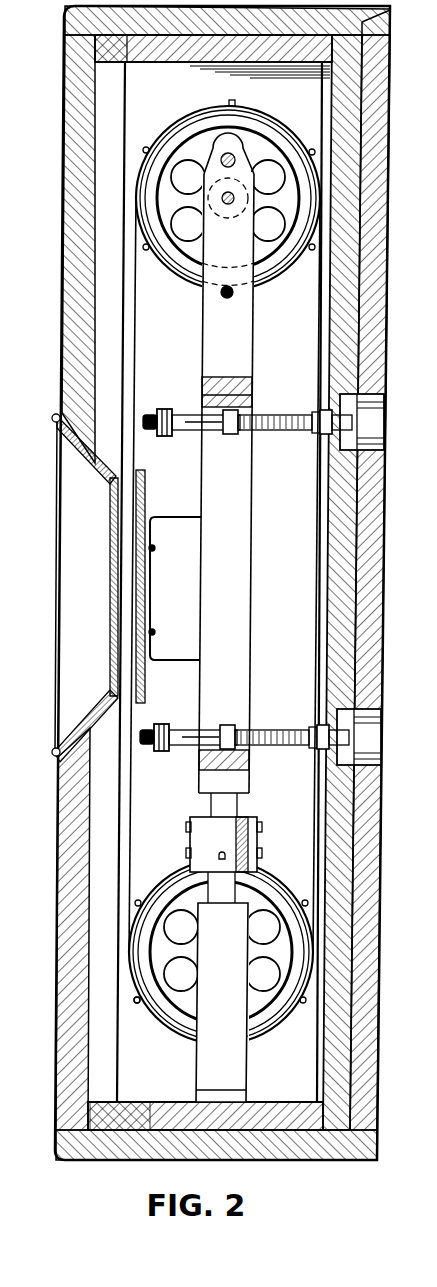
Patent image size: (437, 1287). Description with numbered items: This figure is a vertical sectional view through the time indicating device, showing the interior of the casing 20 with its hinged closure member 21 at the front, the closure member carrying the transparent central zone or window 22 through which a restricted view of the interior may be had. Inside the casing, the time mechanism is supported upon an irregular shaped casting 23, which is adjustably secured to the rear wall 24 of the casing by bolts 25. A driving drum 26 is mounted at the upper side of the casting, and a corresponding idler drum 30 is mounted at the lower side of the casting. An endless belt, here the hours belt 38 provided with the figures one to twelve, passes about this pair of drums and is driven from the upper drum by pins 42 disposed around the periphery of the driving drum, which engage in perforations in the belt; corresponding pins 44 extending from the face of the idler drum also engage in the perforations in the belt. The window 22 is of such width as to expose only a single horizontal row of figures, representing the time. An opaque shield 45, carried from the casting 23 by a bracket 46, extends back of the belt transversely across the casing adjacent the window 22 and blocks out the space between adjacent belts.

The casing 20 is at (386, 858).
The hinged closure member 21 is at (70, 890).
The transparent central zone or window 22 is at (113, 604).
The irregular shaped casting 23 is at (250, 644).
The rear wall 24 is at (385, 603).
The bolts 25 is at (300, 428).
The driving drum 26 is at (283, 130).
The idler drum 30 is at (258, 1028).
The hours belt 38 is at (140, 341).
The pins 42 is at (234, 103).
The pins 44 is at (137, 1003).
The opaque shield 45 is at (150, 493).
The bracket 46 is at (159, 658).